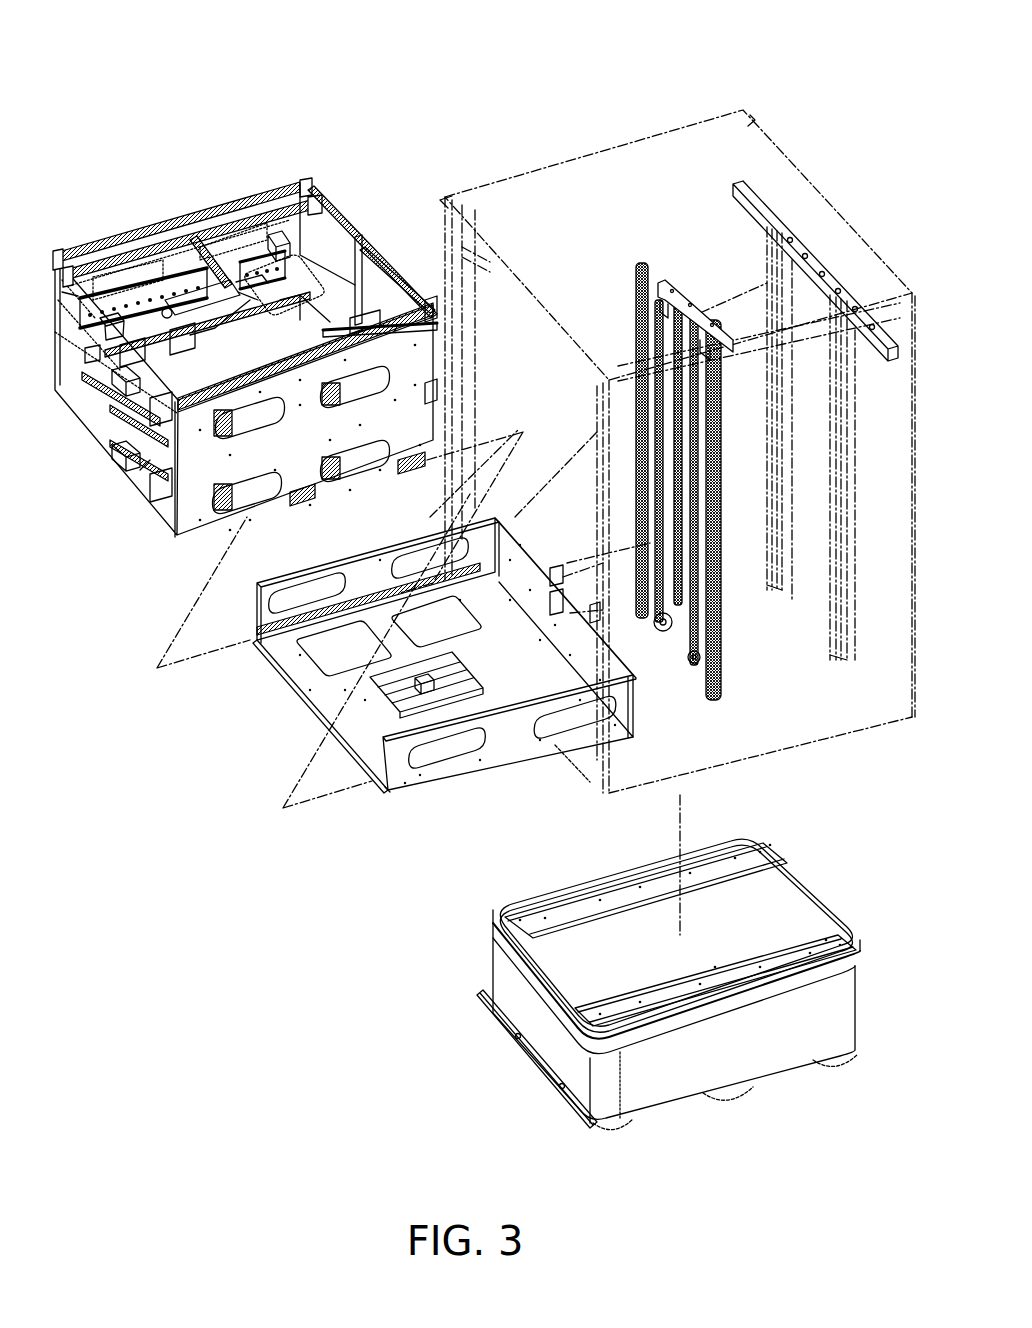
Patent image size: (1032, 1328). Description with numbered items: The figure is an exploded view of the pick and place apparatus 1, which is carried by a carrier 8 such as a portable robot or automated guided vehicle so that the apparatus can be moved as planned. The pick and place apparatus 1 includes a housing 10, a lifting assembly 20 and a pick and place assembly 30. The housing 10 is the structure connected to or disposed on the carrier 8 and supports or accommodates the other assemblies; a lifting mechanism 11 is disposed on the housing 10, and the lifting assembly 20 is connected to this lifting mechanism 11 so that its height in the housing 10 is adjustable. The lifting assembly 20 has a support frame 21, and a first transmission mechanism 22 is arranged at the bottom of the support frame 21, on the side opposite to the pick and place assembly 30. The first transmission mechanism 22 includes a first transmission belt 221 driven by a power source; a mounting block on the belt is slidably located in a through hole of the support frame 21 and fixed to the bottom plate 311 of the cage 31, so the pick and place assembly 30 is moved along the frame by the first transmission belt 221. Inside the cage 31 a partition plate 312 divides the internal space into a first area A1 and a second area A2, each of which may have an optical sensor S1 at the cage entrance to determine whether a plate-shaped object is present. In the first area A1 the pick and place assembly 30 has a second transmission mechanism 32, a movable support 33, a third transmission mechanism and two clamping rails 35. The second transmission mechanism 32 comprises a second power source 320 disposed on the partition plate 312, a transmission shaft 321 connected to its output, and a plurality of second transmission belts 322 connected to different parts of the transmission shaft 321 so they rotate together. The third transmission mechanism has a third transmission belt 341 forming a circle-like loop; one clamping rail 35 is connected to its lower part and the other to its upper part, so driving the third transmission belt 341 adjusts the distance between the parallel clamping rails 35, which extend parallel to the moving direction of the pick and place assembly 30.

The pick and place apparatus 1 is at (440, 80).
The housing 10 is at (765, 100).
The lifting mechanism 11 is at (728, 603).
The carrier 8 is at (773, 1045).
The lifting assembly 20 is at (276, 713).
The support frame 21 is at (383, 813).
The first transmission mechanism 22 is at (462, 682).
The first transmission belt 221 is at (432, 693).
The pick and place assembly 30 is at (148, 547).
The cage 31 is at (100, 233).
The bottom plate 311 is at (113, 468).
The partition plate 312 is at (103, 352).
The optical sensor S1 is at (118, 423).
The first area A1 is at (80, 296).
The second area A2 is at (147, 465).
The second transmission mechanism 32 is at (301, 108).
The second power source 320 is at (362, 287).
The transmission shaft 321 is at (335, 213).
The second transmission belts 322 is at (293, 190).
The movable support 33 is at (220, 303).
The third transmission belt 341 is at (150, 310).
The clamping rails 35 is at (277, 240).